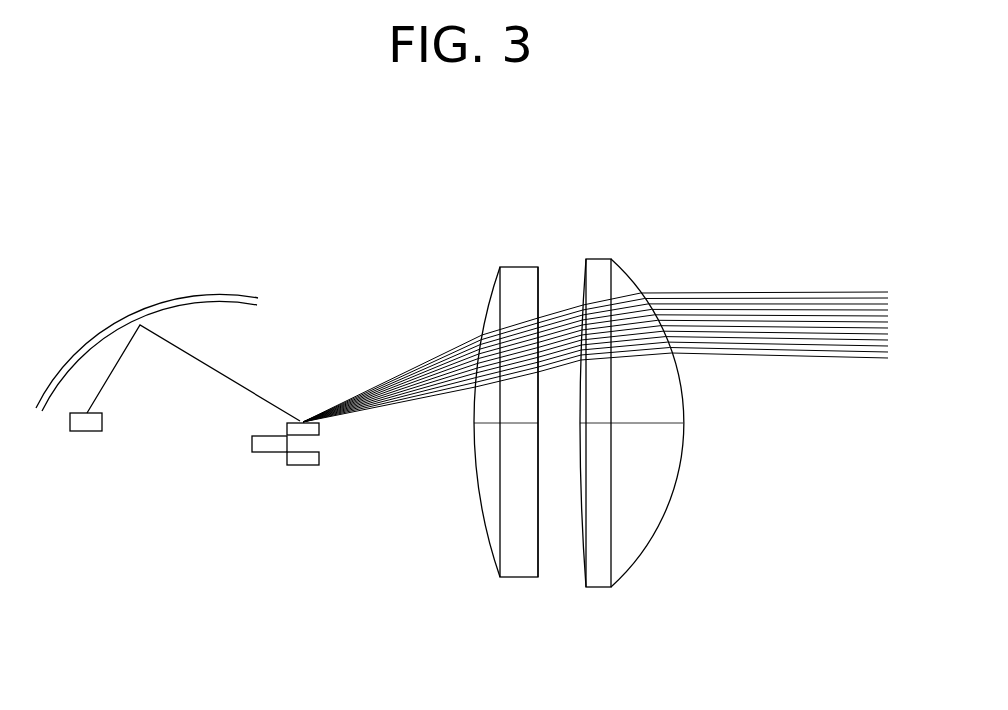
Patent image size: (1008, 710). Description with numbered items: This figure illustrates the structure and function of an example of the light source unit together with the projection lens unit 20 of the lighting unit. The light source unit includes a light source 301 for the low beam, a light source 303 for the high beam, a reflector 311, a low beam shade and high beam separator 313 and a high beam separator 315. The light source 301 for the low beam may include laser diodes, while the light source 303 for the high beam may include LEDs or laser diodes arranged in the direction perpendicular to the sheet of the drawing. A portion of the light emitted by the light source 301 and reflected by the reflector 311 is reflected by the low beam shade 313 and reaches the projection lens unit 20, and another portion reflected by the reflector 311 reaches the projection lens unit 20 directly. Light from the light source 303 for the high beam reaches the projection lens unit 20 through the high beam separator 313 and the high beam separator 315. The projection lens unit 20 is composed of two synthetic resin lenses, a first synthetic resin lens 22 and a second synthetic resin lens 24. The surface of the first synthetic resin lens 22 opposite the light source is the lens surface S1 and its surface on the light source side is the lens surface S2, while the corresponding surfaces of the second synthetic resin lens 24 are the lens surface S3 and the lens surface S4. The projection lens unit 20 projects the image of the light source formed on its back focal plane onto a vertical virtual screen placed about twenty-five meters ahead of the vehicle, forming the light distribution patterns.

The projection lens unit 20 is at (645, 157).
The first synthetic resin lens 22 is at (631, 414).
The second synthetic resin lens 24 is at (497, 397).
The light source for the low beam 301 is at (88, 432).
The light source for the high beam 303 is at (267, 453).
The reflector 311 is at (162, 304).
The low beam shade and high beam separator 313 is at (305, 421).
The high beam separator 315 is at (310, 466).
The lens surface S1 is at (653, 534).
The lens surface S2 is at (582, 512).
The lens surface S3 is at (542, 556).
The lens surface S4 is at (492, 557).